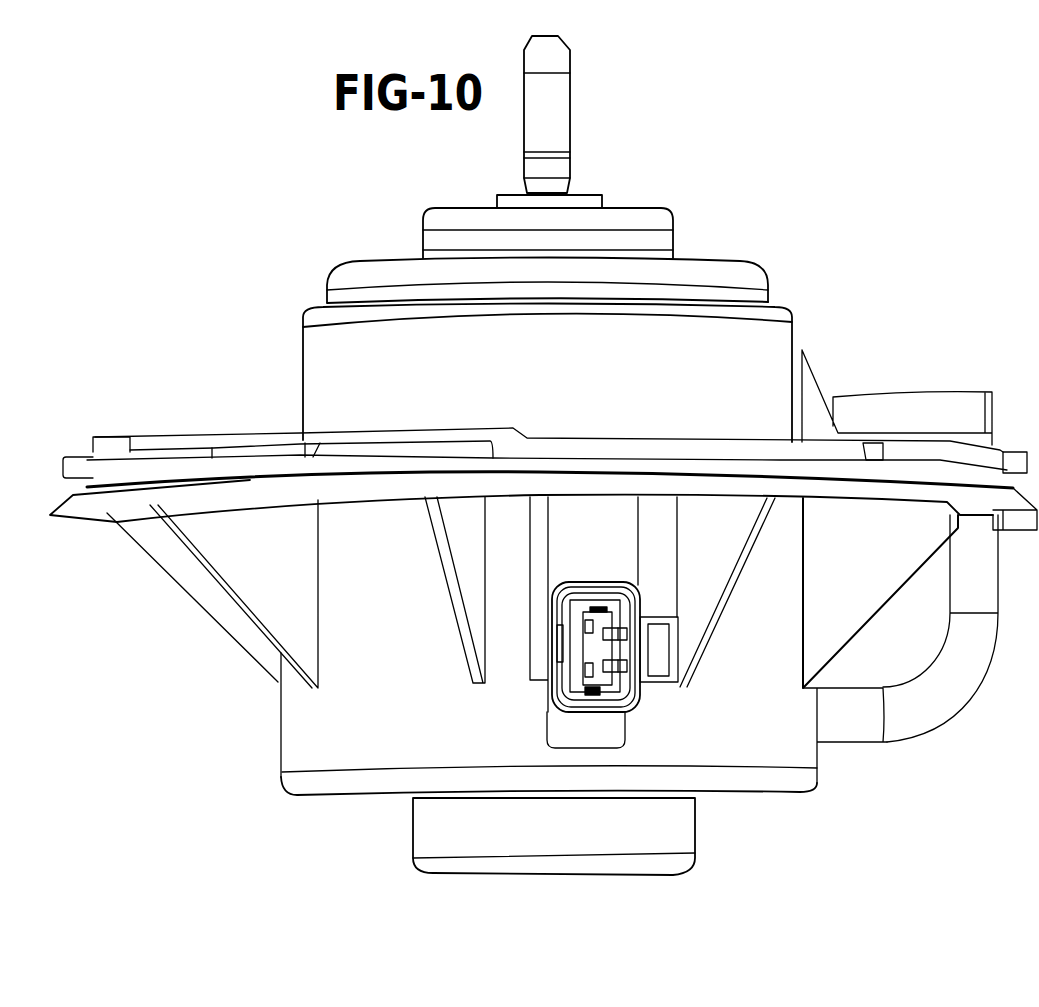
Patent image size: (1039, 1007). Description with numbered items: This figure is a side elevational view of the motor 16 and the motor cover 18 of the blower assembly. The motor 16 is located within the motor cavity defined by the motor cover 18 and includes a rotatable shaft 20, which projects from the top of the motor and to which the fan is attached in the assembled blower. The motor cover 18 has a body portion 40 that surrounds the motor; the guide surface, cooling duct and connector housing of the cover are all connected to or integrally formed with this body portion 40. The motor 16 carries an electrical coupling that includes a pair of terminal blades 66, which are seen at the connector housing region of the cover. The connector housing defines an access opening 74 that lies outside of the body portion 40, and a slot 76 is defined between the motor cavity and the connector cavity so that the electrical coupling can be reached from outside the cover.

The motor 16 is at (718, 222).
The rotatable shaft 20 is at (570, 58).
The motor cover 18 is at (262, 713).
The body portion 40 is at (360, 558).
The terminal blades 66 is at (583, 628).
The access opening 74 is at (618, 612).
The slot 76 is at (617, 650).